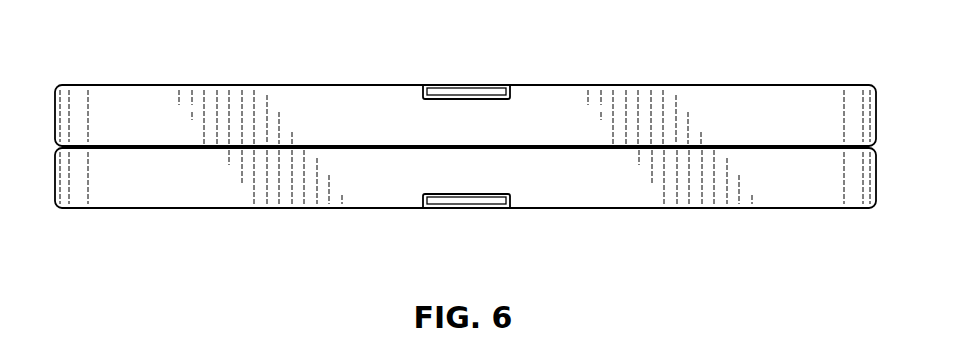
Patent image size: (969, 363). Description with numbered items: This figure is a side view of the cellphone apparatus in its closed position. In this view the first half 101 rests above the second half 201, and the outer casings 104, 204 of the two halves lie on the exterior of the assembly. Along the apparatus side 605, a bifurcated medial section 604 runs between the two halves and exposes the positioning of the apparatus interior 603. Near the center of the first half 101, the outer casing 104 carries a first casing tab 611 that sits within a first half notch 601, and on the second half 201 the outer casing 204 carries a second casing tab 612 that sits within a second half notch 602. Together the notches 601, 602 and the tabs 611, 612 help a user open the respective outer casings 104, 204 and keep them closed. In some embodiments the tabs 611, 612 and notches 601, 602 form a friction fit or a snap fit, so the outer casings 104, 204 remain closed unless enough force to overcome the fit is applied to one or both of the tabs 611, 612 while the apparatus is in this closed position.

The first half 101 is at (744, 101).
The outer casing 104 is at (211, 86).
The second half 201 is at (714, 193).
The outer casing 204 is at (230, 208).
The first half notch 601 is at (505, 89).
The second half notch 602 is at (505, 205).
The apparatus interior 603 is at (880, 147).
The bifurcated medial section 604 is at (57, 146).
The apparatus side 605 is at (805, 193).
The first casing tab 611 is at (453, 88).
The second casing tab 612 is at (453, 205).